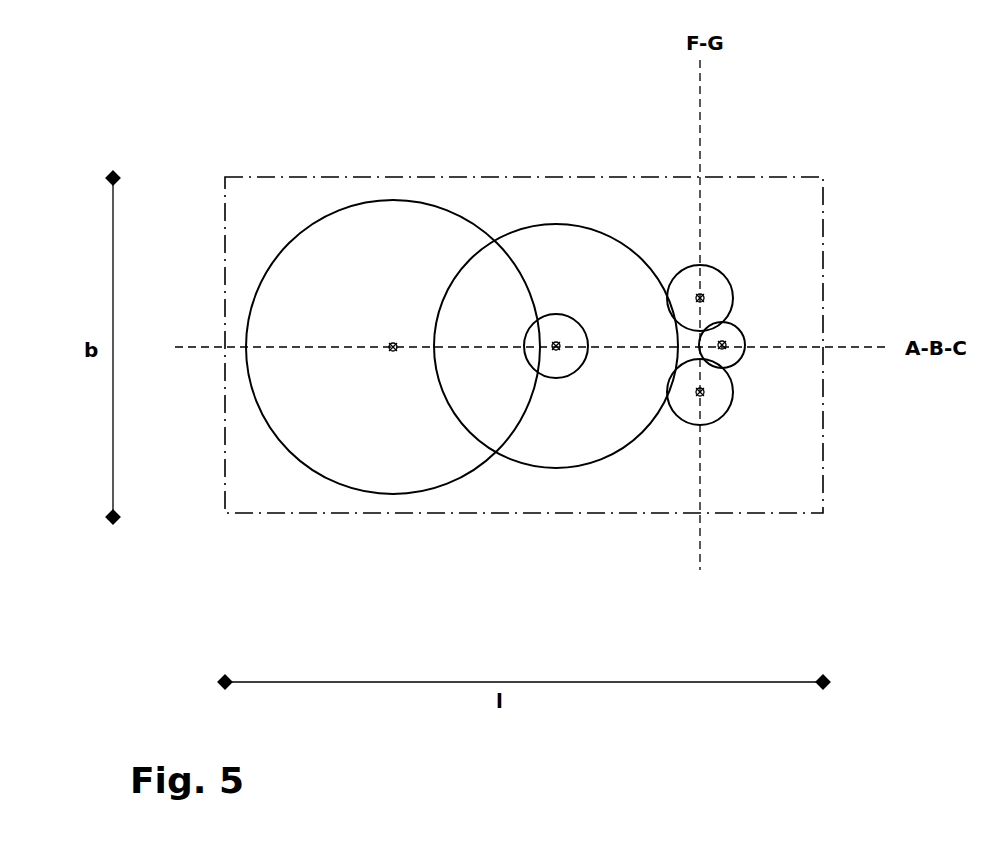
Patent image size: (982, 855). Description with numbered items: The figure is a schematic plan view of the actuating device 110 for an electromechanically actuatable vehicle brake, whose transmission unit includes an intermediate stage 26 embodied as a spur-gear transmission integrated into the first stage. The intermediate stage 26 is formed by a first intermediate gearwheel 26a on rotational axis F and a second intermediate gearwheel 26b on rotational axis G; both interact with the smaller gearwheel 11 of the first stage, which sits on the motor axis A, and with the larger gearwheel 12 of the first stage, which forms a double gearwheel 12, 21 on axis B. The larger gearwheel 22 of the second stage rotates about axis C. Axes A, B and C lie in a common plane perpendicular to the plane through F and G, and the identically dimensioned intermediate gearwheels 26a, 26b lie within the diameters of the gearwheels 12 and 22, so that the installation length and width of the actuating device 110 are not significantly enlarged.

The actuating device 110 is at (823, 516).
The larger gearwheel of the second stage 22 is at (322, 210).
The larger gearwheel of the first stage 12 is at (561, 224).
The double gearwheel 21 is at (583, 372).
The intermediate stage 26 is at (662, 333).
The second intermediate gearwheel 26b is at (730, 325).
The smaller gearwheel of the first stage 11 is at (704, 297).
The first intermediate gearwheel 26a is at (710, 424).